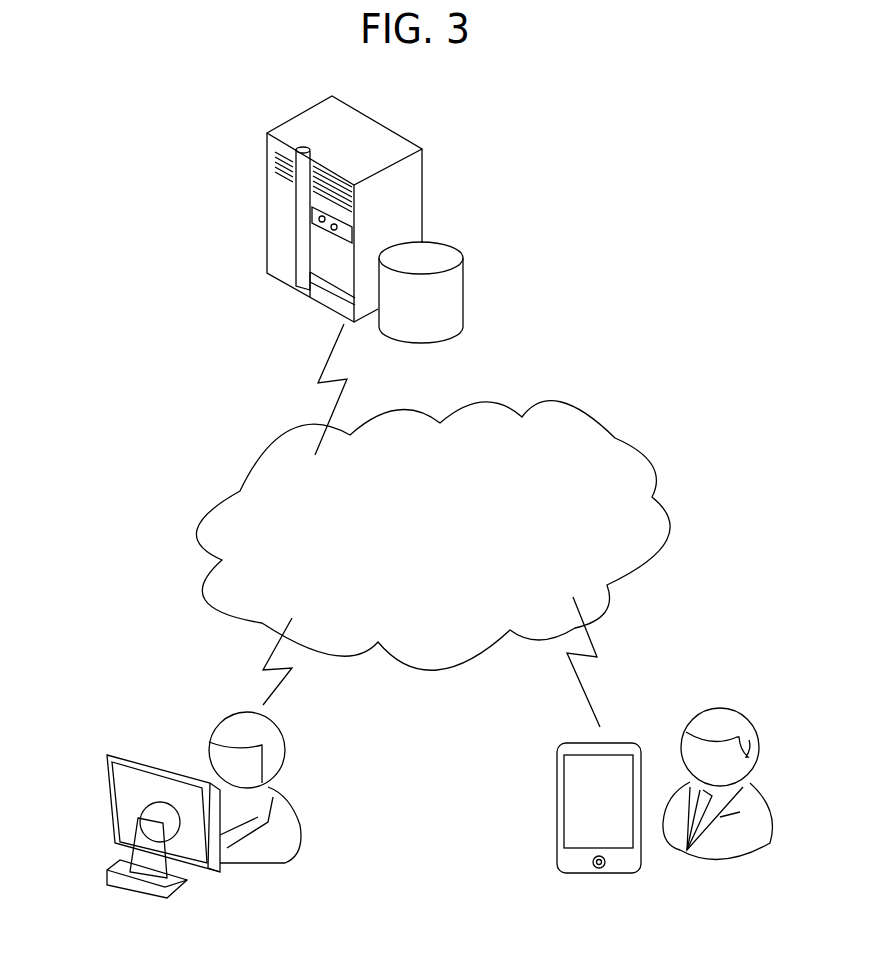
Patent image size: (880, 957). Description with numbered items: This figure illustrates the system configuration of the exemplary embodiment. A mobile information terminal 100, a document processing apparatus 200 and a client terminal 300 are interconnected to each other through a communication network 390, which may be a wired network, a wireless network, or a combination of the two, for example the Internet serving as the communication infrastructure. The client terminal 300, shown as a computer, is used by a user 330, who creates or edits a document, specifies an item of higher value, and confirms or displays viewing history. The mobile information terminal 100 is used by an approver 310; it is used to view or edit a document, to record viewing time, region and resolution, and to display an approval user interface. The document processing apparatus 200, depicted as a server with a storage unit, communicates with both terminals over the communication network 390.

The mobile information terminal 100 is at (557, 808).
The document processing apparatus 200 is at (422, 172).
The client terminal 300 is at (108, 798).
The approver 310 is at (757, 730).
The user 330 is at (287, 748).
The communication network 390 is at (644, 450).